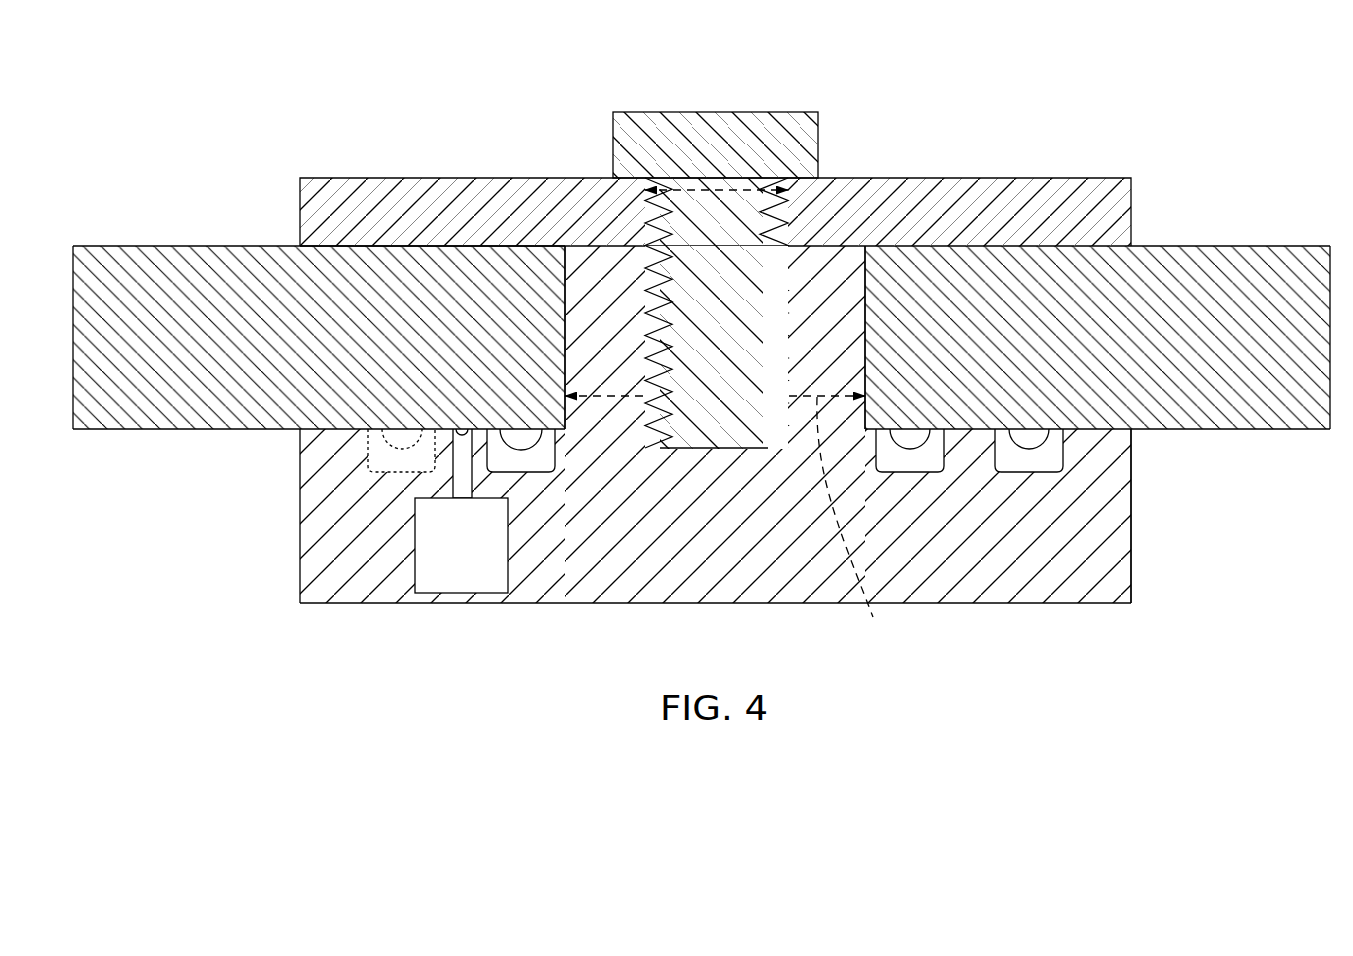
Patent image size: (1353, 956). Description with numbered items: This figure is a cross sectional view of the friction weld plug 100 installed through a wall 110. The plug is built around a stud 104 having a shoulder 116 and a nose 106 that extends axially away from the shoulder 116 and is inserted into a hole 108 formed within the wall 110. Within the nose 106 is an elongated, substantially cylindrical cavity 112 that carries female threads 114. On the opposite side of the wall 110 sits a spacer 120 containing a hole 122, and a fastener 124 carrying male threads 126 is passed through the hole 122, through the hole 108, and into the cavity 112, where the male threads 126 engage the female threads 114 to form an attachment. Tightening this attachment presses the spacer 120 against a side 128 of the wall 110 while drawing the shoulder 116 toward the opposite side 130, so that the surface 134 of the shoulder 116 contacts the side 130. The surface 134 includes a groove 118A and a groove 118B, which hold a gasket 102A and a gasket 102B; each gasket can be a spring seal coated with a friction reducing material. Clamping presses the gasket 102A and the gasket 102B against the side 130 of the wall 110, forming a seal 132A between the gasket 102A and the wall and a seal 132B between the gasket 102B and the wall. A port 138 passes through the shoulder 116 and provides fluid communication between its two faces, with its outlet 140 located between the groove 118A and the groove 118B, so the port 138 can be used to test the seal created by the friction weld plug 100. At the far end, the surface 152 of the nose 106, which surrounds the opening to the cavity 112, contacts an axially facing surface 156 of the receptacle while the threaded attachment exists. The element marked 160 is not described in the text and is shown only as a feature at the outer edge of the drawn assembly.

The friction weld plug 100 is at (205, 99).
The gasket 102A is at (575, 541).
The gasket 102B is at (339, 471).
The stud 104 is at (1105, 614).
The nose 106 is at (828, 268).
The hole 108 is at (854, 524).
The wall 110 is at (128, 265).
The cavity 112 is at (708, 428).
The female threads 114 is at (760, 297).
The shoulder 116 is at (333, 603).
The groove 118A is at (537, 477).
The groove 118B is at (375, 477).
The spacer 120 is at (505, 178).
The hole 122 is at (735, 190).
The fastener 124 is at (632, 112).
The male threads 126 is at (602, 245).
The side 128 is at (196, 246).
The side 130 is at (138, 430).
The seal 132A is at (515, 412).
The seal 132B is at (395, 412).
The surface 134 is at (332, 428).
The port 138 is at (455, 608).
The outlet 140 is at (461, 430).
The surface 152 is at (575, 240).
The surface 156 is at (602, 248).
The side surface of base 160 is at (1133, 568).